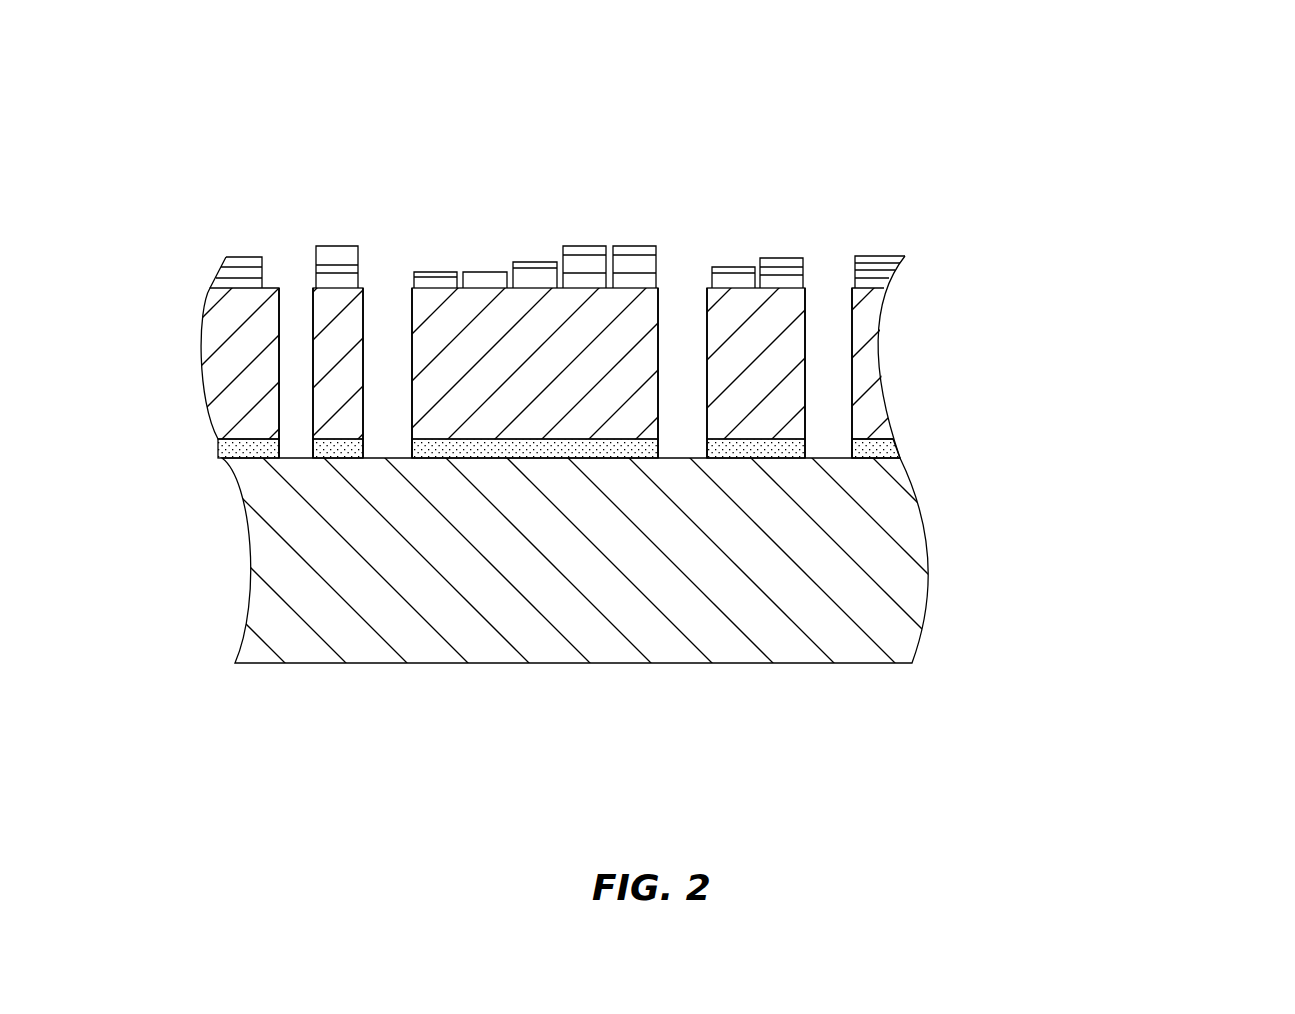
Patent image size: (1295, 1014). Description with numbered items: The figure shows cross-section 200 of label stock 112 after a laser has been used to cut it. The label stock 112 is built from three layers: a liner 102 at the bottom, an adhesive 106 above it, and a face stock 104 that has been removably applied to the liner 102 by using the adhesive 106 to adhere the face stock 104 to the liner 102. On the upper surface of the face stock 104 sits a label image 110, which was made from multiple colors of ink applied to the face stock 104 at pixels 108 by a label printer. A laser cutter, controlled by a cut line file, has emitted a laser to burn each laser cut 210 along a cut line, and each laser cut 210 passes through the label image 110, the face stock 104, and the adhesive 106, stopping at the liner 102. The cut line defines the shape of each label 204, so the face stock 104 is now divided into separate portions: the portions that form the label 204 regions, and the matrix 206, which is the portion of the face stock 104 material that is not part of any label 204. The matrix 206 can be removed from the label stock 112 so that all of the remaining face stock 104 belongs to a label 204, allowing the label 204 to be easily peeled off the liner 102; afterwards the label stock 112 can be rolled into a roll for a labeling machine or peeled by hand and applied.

The cross-section 200 is at (644, 395).
The liner 102 is at (658, 663).
The face stock 104 is at (876, 357).
The adhesive 106 is at (897, 445).
The pixels 108 is at (488, 271).
The label image 110 is at (923, 236).
The label stock 112 is at (644, 433).
The label 204 is at (1102, 210).
The matrix 206 is at (812, 210).
The laser cut 210 is at (566, 339).